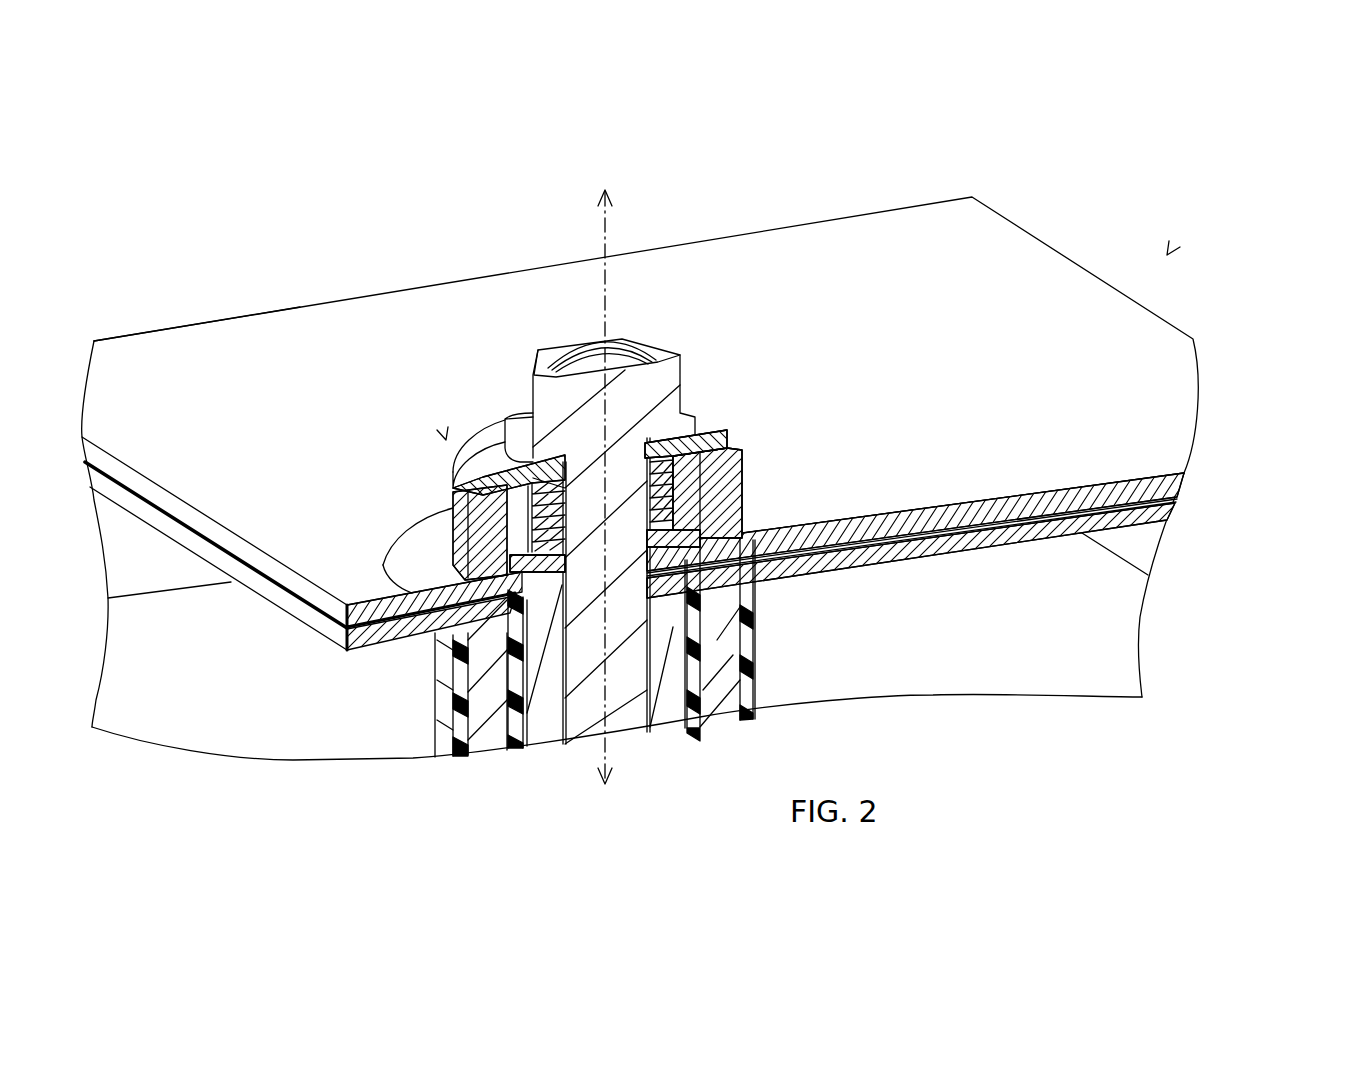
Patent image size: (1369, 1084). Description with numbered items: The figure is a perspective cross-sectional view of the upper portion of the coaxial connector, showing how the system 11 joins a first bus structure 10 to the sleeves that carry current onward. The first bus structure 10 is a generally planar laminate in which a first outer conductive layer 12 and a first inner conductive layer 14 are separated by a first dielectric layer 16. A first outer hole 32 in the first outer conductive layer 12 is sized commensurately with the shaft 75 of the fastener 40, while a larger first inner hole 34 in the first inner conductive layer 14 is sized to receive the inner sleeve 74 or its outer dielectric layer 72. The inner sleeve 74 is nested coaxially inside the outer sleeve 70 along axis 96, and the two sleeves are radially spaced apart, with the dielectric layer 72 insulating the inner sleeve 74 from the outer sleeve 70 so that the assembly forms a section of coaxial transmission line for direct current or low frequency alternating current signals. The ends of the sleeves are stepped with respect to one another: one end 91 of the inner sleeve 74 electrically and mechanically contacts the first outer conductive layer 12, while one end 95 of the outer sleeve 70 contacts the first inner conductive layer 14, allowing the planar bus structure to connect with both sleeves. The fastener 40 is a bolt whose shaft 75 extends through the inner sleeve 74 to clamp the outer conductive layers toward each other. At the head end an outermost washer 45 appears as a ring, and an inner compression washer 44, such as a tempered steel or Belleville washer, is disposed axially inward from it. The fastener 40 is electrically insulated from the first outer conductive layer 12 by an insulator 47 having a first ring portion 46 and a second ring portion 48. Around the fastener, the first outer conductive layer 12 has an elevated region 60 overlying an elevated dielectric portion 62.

The first bus structure 10 is at (1167, 255).
The system 11 is at (353, 195).
The first outer conductive layer 12 is at (968, 270).
The first inner conductive layer 14 is at (1145, 518).
The first dielectric layer 16 is at (1170, 495).
The first outer hole 32 is at (722, 490).
The first inner hole 34 is at (452, 692).
The fastener 40 is at (578, 370).
The compression washer 44 is at (664, 432).
The outermost washer 45 is at (490, 440).
The first ring portion 46 is at (485, 520).
The insulator 47 is at (446, 440).
The second ring portion 48 is at (687, 520).
The elevated region 60 is at (423, 553).
The elevated dielectric portion 62 is at (432, 640).
The outer sleeve 70 is at (722, 645).
The dielectric layer 72 is at (458, 748).
The inner sleeve 74 is at (545, 720).
The shaft 75 is at (618, 497).
The end of the inner sleeve 91 is at (750, 556).
The end of the outer sleeve 95 is at (748, 585).
The axis 96 is at (616, 291).